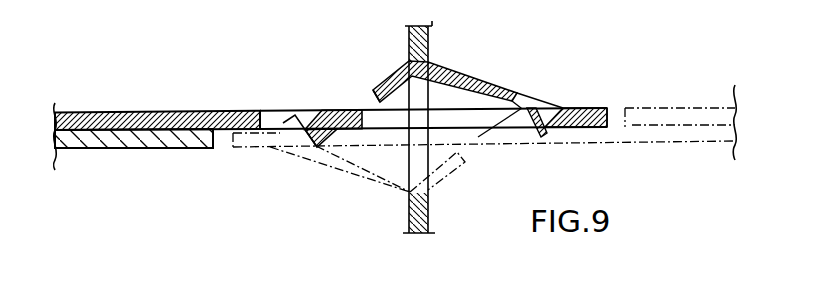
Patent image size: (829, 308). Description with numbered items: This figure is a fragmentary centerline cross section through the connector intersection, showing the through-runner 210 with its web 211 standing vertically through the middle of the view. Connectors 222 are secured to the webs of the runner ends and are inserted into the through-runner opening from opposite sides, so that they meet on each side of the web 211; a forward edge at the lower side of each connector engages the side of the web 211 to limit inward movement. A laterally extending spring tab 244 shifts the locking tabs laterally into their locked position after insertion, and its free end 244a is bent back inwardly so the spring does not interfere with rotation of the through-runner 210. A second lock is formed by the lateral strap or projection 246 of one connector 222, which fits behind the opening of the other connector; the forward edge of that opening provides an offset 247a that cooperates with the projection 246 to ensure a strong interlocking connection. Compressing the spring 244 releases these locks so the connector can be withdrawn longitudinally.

The through-runner 210 is at (440, 224).
The through-runner web 211 is at (431, 201).
The connector 222 is at (210, 112).
The spring tab 244 is at (467, 74).
The free end of the spring 244a is at (383, 83).
The lateral strap or projection 246 is at (547, 139).
The offset 247a is at (318, 150).